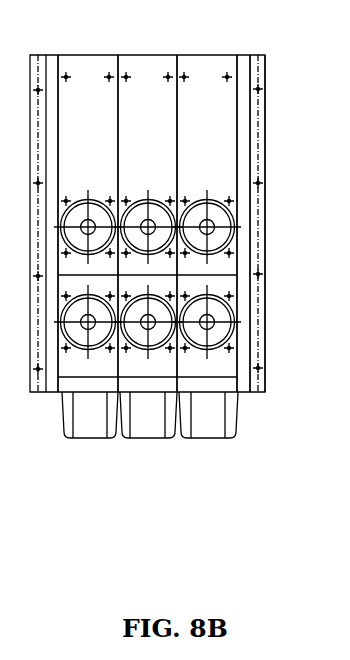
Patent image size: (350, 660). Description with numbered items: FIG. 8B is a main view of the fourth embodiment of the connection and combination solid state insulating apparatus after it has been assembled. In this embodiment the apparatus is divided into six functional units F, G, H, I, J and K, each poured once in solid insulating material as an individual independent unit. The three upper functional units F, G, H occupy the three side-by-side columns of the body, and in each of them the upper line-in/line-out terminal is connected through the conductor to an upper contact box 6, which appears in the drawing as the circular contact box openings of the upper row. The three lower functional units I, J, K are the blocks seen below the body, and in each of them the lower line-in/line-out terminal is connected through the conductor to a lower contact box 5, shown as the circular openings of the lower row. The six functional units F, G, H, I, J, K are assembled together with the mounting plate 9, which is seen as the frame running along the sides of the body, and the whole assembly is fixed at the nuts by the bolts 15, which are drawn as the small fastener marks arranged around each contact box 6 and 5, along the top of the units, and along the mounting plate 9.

The lower contact boxes 5 is at (62, 318).
The upper contact boxes 6 is at (62, 225).
The mounting plate 9 is at (257, 73).
The bolts 15 is at (228, 77).
The functional unit F is at (88, 82).
The functional unit G is at (147, 82).
The functional unit H is at (205, 80).
The functional unit I is at (113, 420).
The functional unit J is at (173, 418).
The functional unit K is at (232, 420).